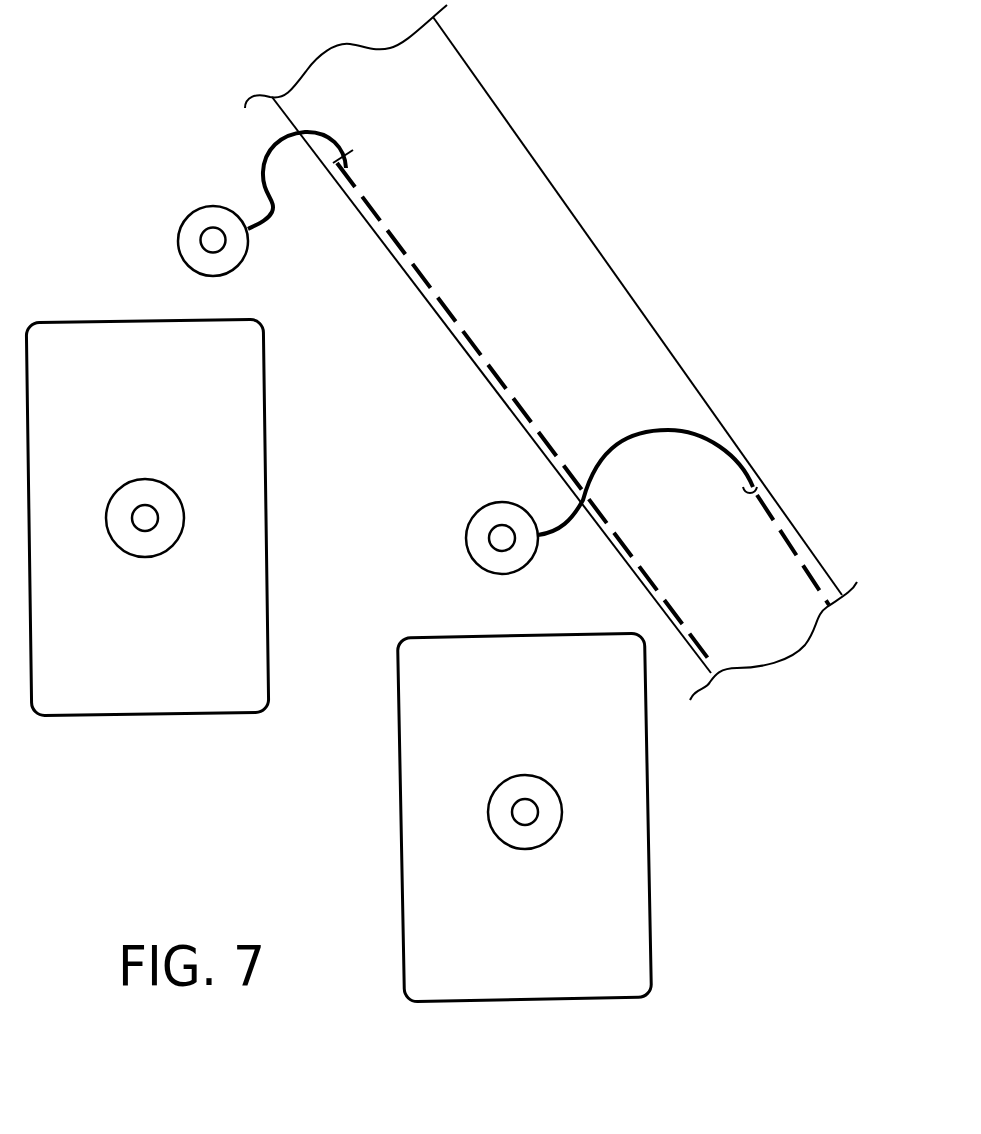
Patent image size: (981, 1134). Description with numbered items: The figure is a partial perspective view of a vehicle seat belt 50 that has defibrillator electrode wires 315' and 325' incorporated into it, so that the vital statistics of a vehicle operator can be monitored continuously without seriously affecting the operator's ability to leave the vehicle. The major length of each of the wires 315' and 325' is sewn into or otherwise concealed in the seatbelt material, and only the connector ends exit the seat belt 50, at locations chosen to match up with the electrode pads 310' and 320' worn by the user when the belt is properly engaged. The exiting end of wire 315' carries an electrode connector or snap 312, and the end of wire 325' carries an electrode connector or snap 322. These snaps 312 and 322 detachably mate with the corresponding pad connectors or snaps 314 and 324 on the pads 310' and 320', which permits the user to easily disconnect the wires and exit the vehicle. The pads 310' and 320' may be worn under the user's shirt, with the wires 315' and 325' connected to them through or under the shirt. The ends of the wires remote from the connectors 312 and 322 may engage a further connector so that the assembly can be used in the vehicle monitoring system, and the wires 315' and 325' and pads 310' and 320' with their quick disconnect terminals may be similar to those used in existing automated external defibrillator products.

The seat belt 50 is at (503, 116).
The electrode connector or snap 312 is at (184, 218).
The pad connector or snap 314 is at (183, 500).
The defibrillator electrode wire 315' is at (480, 398).
The electrode connector or snap 322 is at (502, 502).
The pad connector or snap 324 is at (558, 793).
The defibrillator electrode wire 325' is at (683, 517).
The electrode pad 310' is at (147, 517).
The electrode pad 320' is at (525, 817).